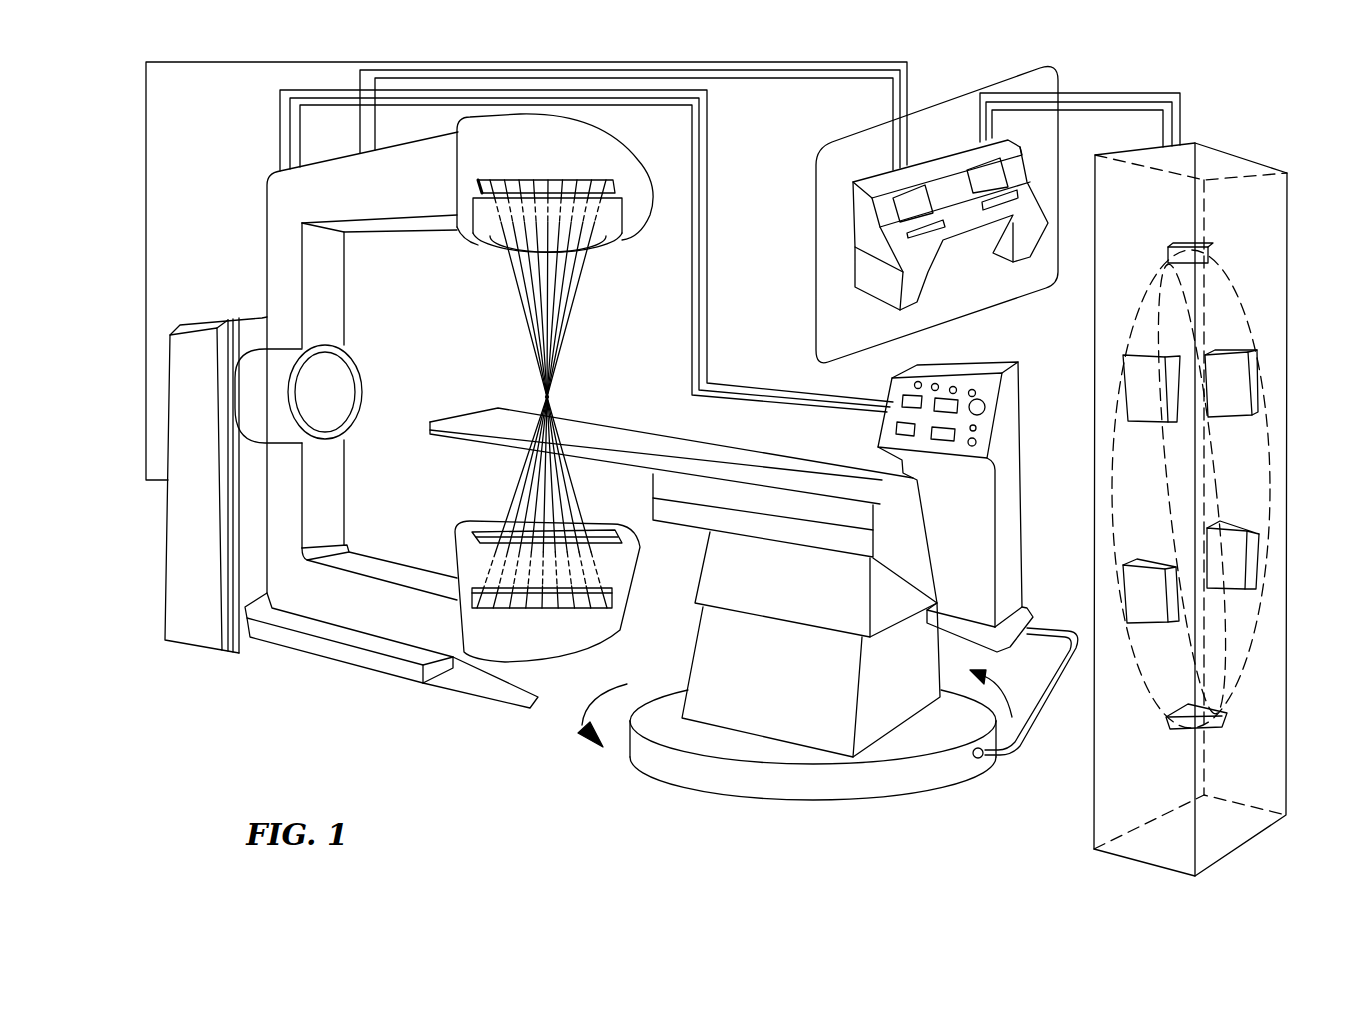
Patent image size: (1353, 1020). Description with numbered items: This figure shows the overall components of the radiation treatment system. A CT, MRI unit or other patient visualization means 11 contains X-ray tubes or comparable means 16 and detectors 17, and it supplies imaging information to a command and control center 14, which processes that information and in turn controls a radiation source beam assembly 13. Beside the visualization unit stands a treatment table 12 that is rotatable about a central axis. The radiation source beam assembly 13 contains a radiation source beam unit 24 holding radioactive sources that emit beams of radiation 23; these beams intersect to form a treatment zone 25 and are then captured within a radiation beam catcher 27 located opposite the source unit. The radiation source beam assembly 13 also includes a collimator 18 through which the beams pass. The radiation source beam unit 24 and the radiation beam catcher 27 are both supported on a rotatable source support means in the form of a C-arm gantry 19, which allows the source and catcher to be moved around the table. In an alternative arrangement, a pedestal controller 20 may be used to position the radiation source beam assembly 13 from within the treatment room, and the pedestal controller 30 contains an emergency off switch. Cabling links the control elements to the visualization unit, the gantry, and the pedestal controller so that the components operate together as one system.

The patient visualization means 11 is at (1116, 856).
The treatment table 12 is at (785, 787).
The radiation source beam assembly 13 is at (628, 142).
The command and control center 14 is at (947, 98).
The X-ray tubes 16 is at (1163, 350).
The detectors 17 is at (1188, 623).
The collimator 18 is at (628, 228).
The C-arm gantry 19 is at (246, 618).
The pedestal controller 20 is at (969, 486).
The beams of radiation 23 is at (578, 303).
The radiation source beam unit 24 is at (480, 183).
The treatment zone 25 is at (543, 392).
The radiation beam catcher 27 is at (497, 657).
The pedestal controller 30 is at (988, 414).